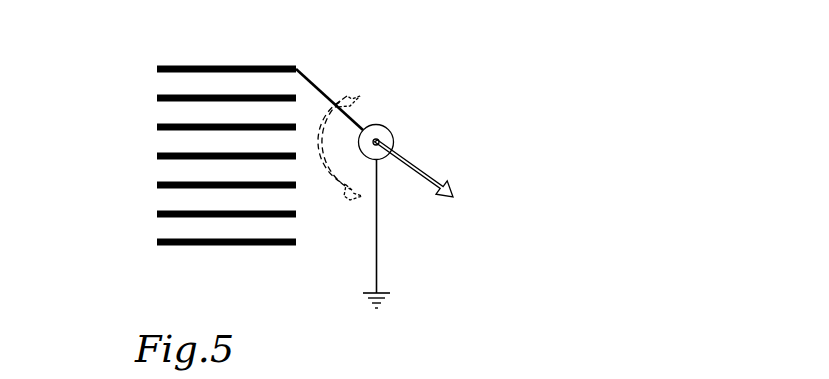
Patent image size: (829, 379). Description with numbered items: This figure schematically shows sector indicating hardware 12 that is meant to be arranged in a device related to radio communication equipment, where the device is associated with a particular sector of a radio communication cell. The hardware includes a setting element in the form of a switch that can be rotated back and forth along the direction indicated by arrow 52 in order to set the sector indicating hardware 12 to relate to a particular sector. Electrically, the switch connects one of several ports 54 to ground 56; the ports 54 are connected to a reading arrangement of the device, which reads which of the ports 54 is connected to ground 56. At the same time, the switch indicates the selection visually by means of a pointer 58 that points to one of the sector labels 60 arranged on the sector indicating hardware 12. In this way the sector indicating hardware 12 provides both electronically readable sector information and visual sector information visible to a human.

The sector indicating hardware 12 is at (650, 59).
The arrow 52 is at (345, 97).
The ports 54 is at (116, 186).
The ground 56 is at (376, 255).
The pointer 58 is at (414, 165).
The sector labels 60 is at (378, 124).